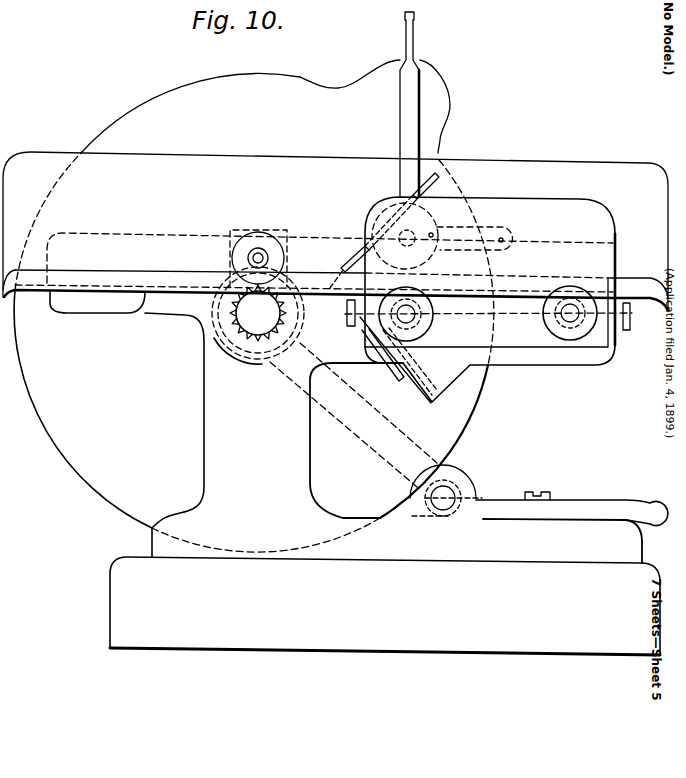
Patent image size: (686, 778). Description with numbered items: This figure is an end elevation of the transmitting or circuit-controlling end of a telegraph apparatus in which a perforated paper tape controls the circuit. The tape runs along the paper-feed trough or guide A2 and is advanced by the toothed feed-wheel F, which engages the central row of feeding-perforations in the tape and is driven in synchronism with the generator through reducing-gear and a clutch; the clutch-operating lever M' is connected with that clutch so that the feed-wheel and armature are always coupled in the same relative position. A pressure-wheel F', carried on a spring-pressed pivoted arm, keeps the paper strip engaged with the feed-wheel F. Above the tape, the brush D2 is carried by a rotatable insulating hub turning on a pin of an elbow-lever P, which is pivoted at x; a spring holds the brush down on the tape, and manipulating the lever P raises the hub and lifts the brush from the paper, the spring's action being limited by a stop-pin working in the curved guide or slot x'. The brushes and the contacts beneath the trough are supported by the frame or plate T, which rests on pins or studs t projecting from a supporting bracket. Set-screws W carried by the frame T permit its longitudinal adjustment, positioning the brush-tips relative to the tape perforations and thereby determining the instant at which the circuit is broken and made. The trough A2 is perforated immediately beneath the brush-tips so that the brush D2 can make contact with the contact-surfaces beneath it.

The elbow-lever P is at (405, 113).
The brush D2 is at (441, 177).
The frame or plate T is at (520, 201).
The curved guide or slot x' is at (412, 236).
The pivot x is at (479, 233).
The pins or studs t is at (561, 313).
The set-screws W is at (629, 331).
The pressure-wheel F' is at (258, 246).
The toothed feed-wheel F is at (258, 315).
The paper-feed trough or guide A2 is at (35, 283).
The clutch-operating lever M' is at (385, 415).